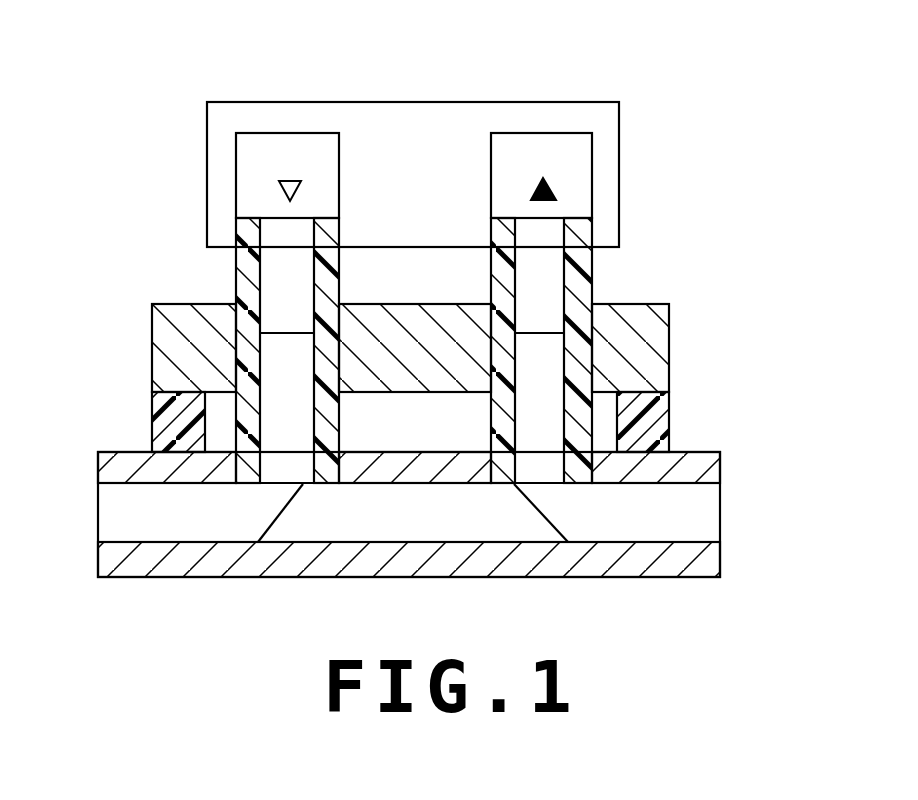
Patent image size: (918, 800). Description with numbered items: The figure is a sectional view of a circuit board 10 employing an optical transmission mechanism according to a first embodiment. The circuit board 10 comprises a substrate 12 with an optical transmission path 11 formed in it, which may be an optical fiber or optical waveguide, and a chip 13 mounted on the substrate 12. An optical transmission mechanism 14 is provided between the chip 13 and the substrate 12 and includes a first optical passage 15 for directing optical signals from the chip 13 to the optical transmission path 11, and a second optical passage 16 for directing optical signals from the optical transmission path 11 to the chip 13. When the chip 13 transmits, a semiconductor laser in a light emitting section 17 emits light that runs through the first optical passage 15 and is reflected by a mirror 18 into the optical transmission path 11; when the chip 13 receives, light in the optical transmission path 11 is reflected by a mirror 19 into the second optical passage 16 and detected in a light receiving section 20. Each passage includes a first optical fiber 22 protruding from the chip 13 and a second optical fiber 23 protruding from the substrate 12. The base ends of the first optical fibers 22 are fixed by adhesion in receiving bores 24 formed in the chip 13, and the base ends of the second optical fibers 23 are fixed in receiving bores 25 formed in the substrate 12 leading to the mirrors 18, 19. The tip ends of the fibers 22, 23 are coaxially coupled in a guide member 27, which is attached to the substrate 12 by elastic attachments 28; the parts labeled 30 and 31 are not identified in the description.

The circuit board 10 is at (668, 72).
The optical transmission path 11 is at (684, 540).
The substrate 12 is at (456, 578).
The chip 13 is at (485, 101).
The optical transmission mechanism 14 is at (617, 290).
The first optical passage 15 is at (234, 273).
The second optical passage 16 is at (488, 262).
The light emitting section 17 is at (340, 181).
The mirror 18 is at (266, 523).
The mirror 19 is at (552, 512).
The light receiving section 20 is at (491, 184).
The first optical fiber 22 is at (412, 277).
The second optical fiber 23 is at (412, 383).
The receiving bore 24 is at (249, 225).
The receiving bore 25 is at (324, 484).
The guide member 27 is at (670, 343).
The elastic attachment 28 is at (152, 420).
The gate 30 is at (333, 384).
The gate 31 is at (492, 358).